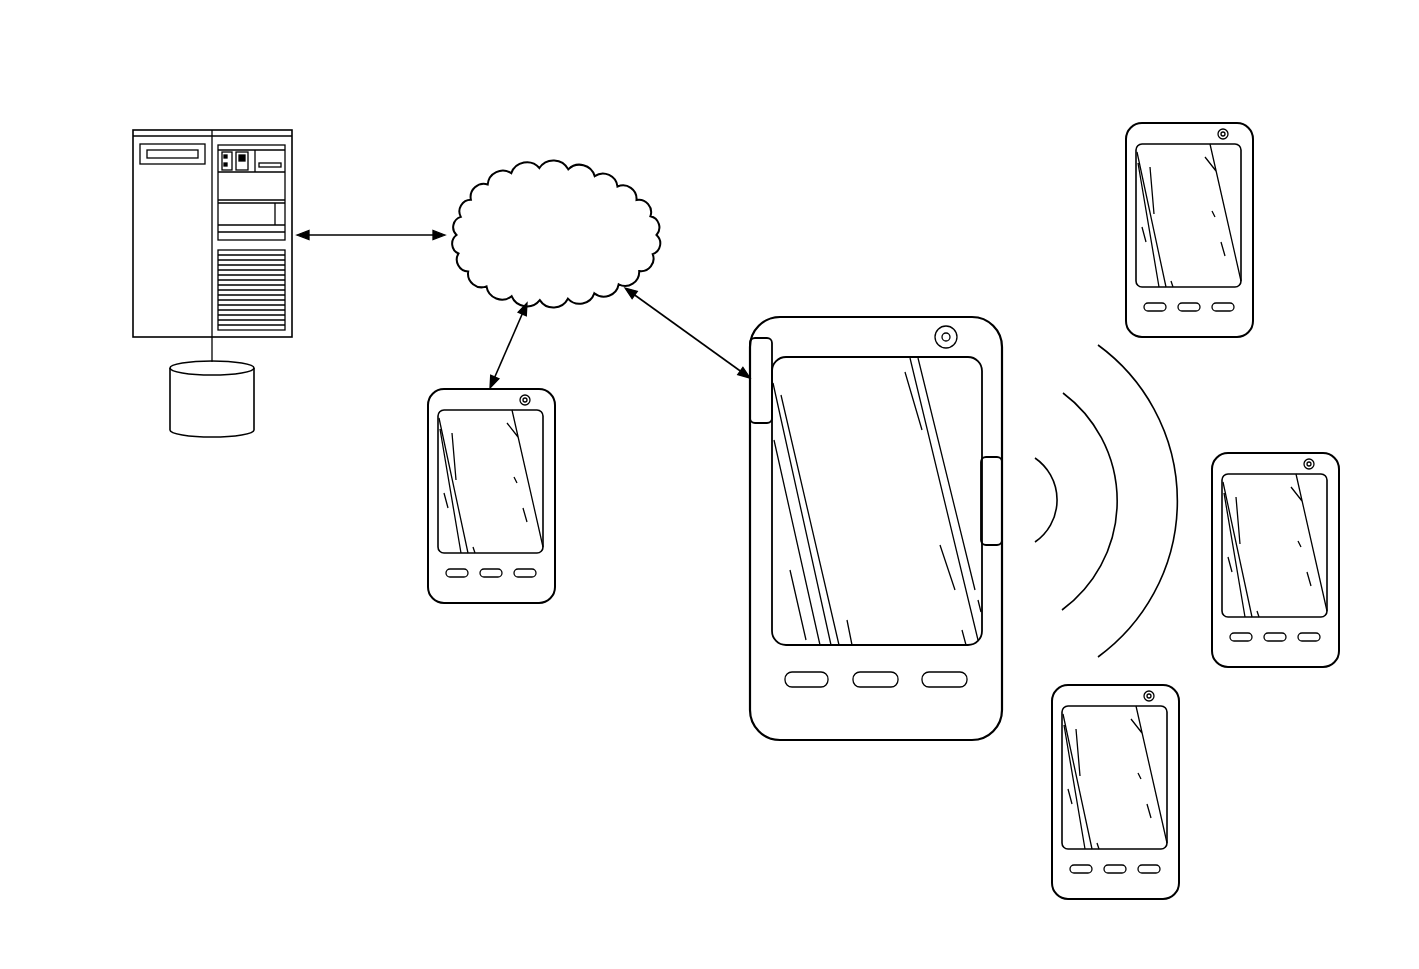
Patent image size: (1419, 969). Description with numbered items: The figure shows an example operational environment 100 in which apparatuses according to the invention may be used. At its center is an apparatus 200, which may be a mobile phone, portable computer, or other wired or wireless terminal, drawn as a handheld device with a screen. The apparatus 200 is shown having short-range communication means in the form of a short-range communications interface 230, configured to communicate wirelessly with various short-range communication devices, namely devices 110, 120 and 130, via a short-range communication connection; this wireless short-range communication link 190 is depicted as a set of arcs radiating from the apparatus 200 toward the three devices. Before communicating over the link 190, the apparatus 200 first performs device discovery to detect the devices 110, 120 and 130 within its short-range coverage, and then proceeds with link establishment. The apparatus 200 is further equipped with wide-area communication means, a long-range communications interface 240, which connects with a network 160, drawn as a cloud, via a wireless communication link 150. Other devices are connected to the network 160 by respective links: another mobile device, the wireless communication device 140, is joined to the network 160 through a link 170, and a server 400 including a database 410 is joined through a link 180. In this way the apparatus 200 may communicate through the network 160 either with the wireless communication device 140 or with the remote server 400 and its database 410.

The operational environment 100 is at (1013, 93).
The short-range communication device 110 is at (1268, 198).
The short-range communication device 120 is at (1351, 588).
The short-range communication device 130 is at (1191, 821).
The wireless communication device 140 is at (415, 524).
The wireless communication link 150 is at (688, 330).
The network 160 is at (538, 248).
The link 170 is at (507, 345).
The link 180 is at (372, 233).
The wireless short-range communication link 190 is at (1175, 419).
The apparatus 200 is at (911, 306).
The short-range communications interface 230 is at (985, 480).
The long-range communications interface 240 is at (756, 405).
The server 400 is at (240, 118).
The database 410 is at (194, 416).